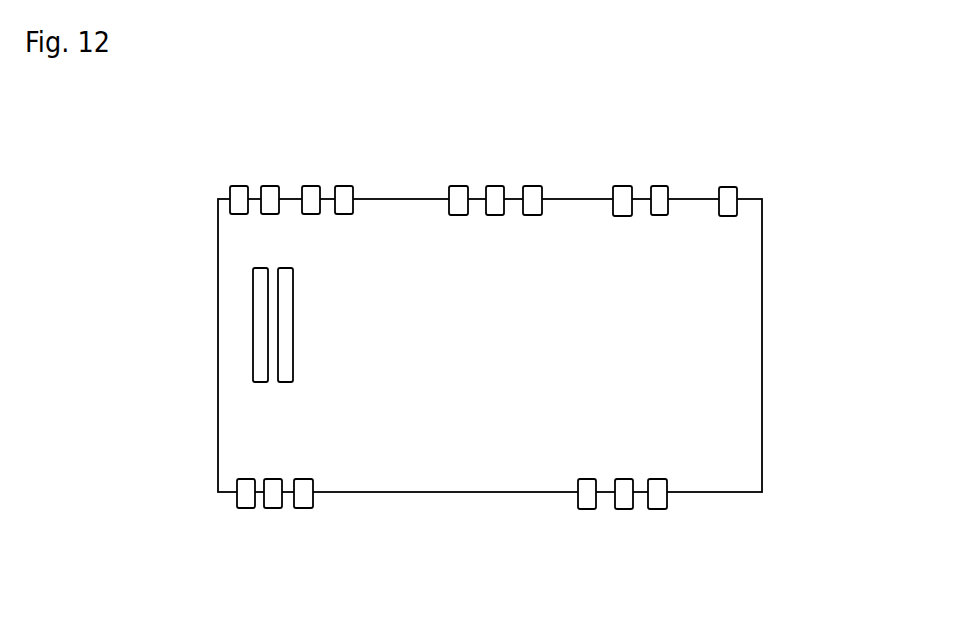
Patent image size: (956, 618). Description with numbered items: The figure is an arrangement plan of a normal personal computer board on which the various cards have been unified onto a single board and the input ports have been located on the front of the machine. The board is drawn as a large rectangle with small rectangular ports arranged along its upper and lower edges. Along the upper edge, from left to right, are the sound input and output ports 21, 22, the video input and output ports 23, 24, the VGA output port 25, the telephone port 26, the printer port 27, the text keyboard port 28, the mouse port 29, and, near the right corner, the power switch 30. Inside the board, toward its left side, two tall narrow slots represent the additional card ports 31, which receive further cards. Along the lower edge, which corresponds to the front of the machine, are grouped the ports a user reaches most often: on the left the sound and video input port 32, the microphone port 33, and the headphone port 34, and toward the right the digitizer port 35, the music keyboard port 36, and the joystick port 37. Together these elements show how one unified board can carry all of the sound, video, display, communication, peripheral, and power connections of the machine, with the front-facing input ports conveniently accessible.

The sound input port 21 is at (238, 197).
The sound output port 22 is at (268, 196).
The video input port 23 is at (308, 186).
The video output port 24 is at (345, 186).
The VGA output port 25 is at (457, 186).
The telephone port 26 is at (494, 193).
The printer port 27 is at (535, 186).
The text keyboard port 28 is at (620, 193).
The mouse port 29 is at (660, 193).
The power switch 30 is at (728, 188).
The additional card ports 31 is at (283, 330).
The sound and video input port 32 is at (245, 500).
The microphone port 33 is at (273, 500).
The headphone port 34 is at (305, 500).
The digitizer port 35 is at (580, 503).
The music keyboard port 36 is at (620, 503).
The joystick port 37 is at (656, 510).